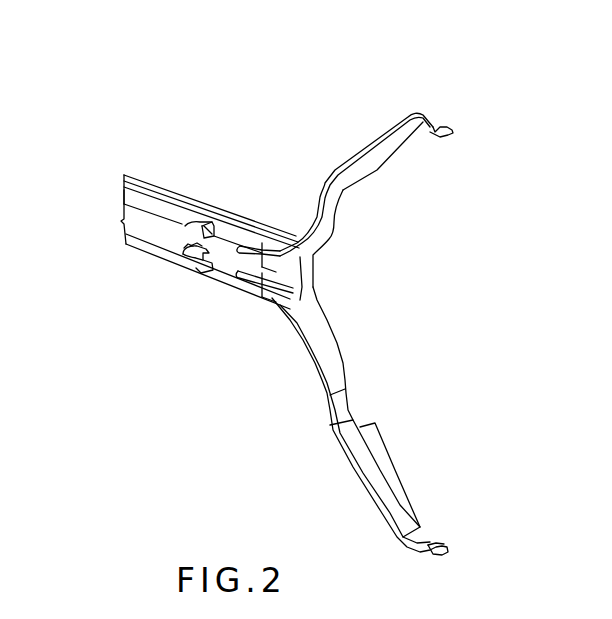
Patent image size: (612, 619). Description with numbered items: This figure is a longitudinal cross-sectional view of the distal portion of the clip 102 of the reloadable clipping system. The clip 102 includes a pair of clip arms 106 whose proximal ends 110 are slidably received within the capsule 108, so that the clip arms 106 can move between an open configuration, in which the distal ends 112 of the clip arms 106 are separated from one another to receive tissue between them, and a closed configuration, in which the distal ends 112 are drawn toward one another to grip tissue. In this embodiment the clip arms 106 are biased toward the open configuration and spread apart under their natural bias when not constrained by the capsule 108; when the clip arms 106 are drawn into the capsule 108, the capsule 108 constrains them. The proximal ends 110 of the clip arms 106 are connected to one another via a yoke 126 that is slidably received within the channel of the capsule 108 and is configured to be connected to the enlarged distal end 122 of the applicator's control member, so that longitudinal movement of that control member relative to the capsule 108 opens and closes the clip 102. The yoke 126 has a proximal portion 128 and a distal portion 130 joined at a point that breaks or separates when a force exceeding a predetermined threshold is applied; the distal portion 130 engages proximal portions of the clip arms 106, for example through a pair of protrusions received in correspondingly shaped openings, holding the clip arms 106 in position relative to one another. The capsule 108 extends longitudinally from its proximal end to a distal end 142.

The clip 102 is at (317, 143).
The clip arms 106 is at (377, 170).
The capsule 108 is at (143, 180).
The proximal ends 110 is at (208, 222).
The distal ends 112 is at (452, 132).
The enlarged distal end 122 is at (197, 244).
The yoke 126 is at (188, 244).
The proximal portion 128 is at (135, 204).
The distal portion 130 is at (229, 242).
The distal end 142 is at (278, 320).